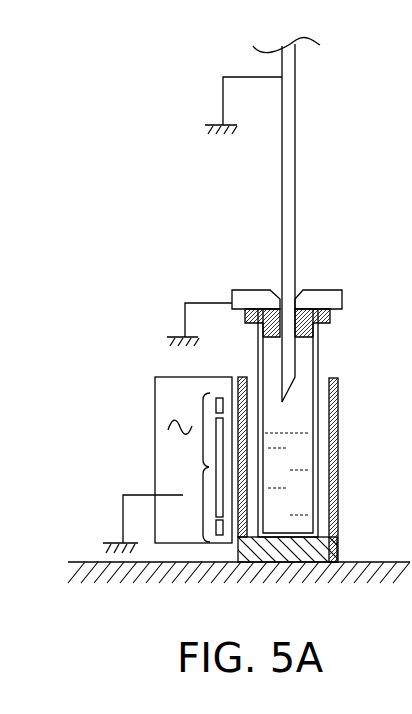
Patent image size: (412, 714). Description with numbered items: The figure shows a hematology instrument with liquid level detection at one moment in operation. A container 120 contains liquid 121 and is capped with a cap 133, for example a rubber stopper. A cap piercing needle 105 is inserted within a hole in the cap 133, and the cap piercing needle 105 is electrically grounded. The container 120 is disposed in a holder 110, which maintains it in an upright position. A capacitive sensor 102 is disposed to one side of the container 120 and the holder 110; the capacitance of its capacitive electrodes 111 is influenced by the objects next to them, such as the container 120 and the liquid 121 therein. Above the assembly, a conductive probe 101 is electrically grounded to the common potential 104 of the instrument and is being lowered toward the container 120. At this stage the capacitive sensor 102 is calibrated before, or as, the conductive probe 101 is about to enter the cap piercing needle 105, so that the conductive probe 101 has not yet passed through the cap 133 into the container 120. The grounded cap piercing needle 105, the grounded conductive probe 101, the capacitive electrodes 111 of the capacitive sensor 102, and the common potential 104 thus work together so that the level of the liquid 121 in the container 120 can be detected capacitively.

The conductive probe 101 is at (296, 107).
The capacitive sensor 102 is at (155, 397).
The common potential 104 is at (190, 126).
The cap piercing needle 105 is at (280, 368).
The holder 110 is at (340, 433).
The capacitive electrodes 111 is at (208, 467).
The container 120 is at (318, 355).
The liquid 121 is at (305, 483).
The cap 133 is at (332, 322).